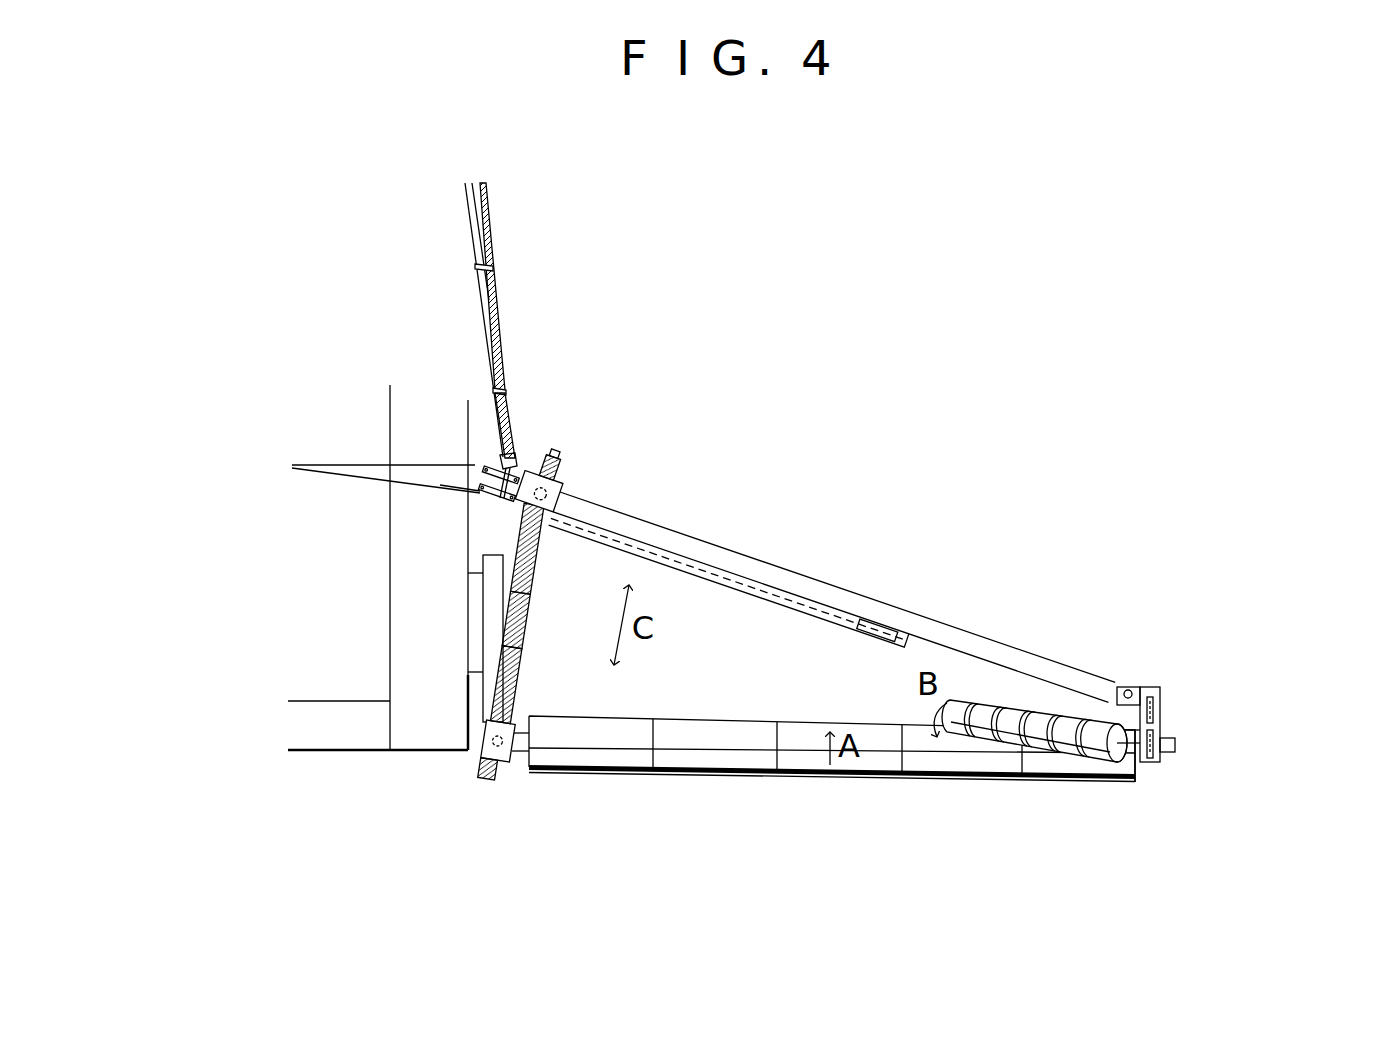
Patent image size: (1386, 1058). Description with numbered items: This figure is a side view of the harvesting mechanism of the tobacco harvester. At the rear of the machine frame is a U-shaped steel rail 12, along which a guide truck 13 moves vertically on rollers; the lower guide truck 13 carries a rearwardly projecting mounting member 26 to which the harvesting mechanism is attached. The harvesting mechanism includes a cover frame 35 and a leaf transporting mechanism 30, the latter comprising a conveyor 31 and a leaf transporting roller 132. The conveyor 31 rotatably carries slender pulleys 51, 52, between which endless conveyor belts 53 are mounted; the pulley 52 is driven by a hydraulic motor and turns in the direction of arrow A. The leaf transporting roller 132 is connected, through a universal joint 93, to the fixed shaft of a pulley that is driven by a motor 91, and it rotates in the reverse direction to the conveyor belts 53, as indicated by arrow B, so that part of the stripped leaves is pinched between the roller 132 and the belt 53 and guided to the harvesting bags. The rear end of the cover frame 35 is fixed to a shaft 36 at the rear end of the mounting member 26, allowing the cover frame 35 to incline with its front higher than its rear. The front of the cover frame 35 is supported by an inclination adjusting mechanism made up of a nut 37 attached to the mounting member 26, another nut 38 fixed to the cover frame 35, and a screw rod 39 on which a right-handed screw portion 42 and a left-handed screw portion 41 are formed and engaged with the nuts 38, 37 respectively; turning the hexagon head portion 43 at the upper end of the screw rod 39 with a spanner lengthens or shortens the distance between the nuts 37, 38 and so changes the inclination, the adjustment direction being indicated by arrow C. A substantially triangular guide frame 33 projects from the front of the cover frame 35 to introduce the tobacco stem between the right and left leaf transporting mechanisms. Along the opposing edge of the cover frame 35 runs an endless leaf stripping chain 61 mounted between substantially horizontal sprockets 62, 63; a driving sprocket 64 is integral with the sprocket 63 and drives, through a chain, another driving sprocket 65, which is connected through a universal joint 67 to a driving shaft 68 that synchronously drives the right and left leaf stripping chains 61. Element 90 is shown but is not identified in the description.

The rail 12 is at (398, 393).
The guide truck 13 is at (468, 612).
The mounting member 26 is at (518, 749).
The leaf transporting mechanism 30 is at (751, 777).
The conveyor 31 is at (940, 779).
The guide frame 33 is at (323, 466).
The cover frame 35 is at (985, 633).
The shaft 36 is at (1130, 688).
The nut 37 is at (482, 758).
The nut 38 is at (562, 494).
The screw rod 39 is at (537, 607).
The left-handed screw portion 41 is at (527, 657).
The right-handed screw portion 42 is at (539, 573).
The hexagon head portion 43 is at (559, 455).
The pulley 51 is at (1224, 776).
The pulley 52 is at (1163, 763).
The conveyor belt 53 is at (808, 762).
The leaf stripping chain 61 is at (806, 602).
The sprocket 62 is at (881, 639).
The sprocket 63 is at (480, 493).
The driving sprocket 64 is at (595, 432).
The driving sprocket 65 is at (521, 478).
The universal joint 67 is at (507, 455).
The driving shaft 68 is at (497, 330).
The pin 90 is at (1162, 743).
The motor 91 is at (1162, 695).
The universal joint 93 is at (1134, 777).
The leaf transporting roller 132 is at (1047, 742).